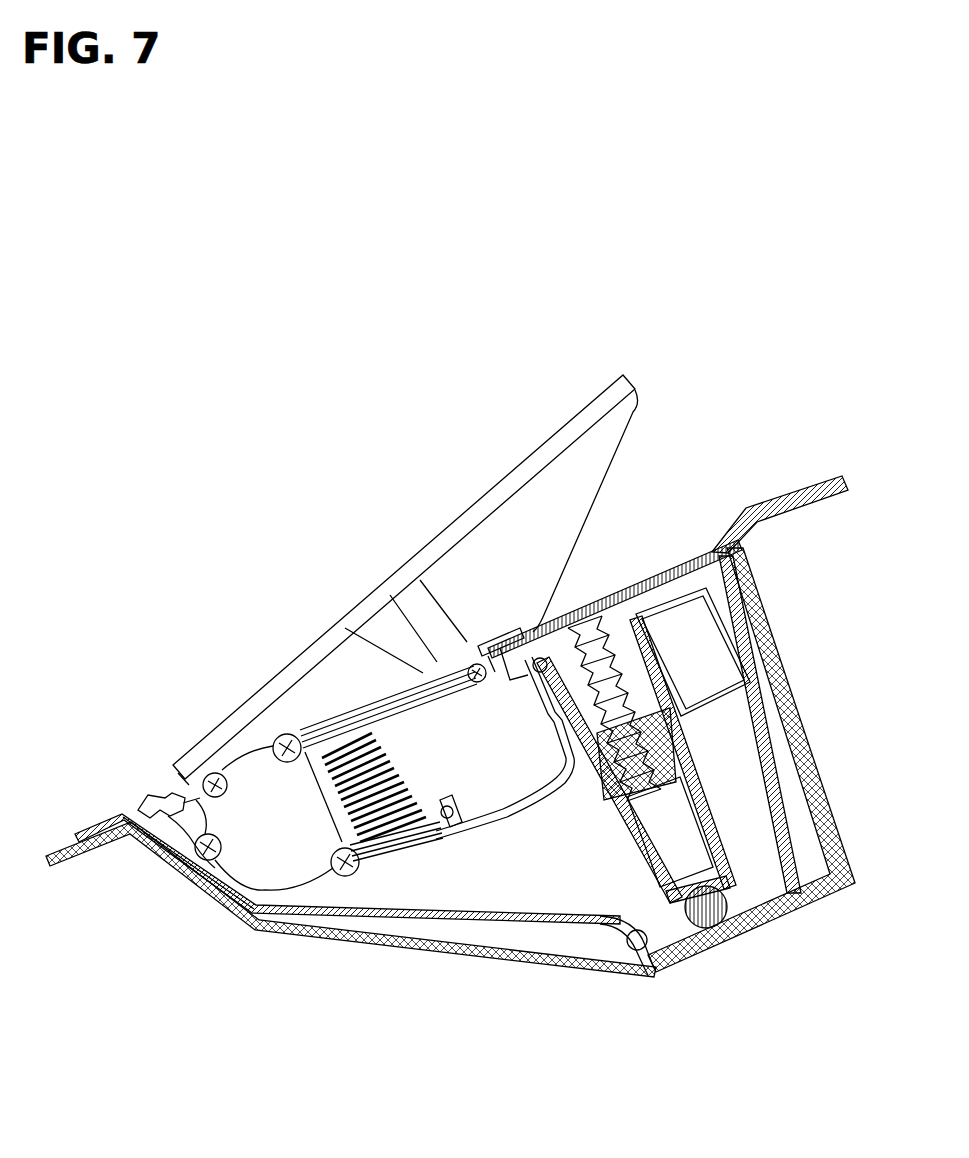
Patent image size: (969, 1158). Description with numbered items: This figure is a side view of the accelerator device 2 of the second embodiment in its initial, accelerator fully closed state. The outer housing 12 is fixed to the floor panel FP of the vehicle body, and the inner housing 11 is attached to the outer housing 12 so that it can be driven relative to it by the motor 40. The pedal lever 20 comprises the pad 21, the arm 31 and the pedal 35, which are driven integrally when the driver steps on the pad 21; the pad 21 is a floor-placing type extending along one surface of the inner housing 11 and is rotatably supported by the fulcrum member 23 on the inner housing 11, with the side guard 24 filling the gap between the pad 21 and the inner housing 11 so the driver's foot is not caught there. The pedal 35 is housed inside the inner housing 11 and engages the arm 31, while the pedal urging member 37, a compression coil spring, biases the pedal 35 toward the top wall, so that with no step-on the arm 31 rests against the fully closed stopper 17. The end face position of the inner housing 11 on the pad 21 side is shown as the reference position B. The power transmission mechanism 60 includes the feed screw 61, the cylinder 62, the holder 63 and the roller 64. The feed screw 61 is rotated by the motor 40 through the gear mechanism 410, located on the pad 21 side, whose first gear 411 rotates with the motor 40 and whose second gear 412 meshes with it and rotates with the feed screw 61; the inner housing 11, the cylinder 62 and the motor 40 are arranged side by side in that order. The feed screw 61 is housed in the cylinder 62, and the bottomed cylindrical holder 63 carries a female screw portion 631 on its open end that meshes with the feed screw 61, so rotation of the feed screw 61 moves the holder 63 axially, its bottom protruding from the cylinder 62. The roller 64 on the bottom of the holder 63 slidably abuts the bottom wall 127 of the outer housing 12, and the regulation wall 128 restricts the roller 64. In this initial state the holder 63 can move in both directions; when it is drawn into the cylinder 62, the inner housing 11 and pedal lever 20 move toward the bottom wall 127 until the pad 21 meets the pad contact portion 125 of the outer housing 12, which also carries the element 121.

The accelerator device 2 is at (154, 1015).
The inner housing 11 is at (500, 838).
The outer housing 12 is at (357, 912).
The fully closed stopper 17 is at (497, 650).
The pedal lever 20 is at (238, 678).
The pad 21 is at (600, 410).
The fulcrum member 23 is at (152, 866).
The side guard 24 is at (612, 440).
The arm 31 is at (412, 598).
The pedal 35 is at (370, 700).
The pedal urging member 37 is at (418, 895).
The motor 40 is at (710, 632).
The power transmission mechanism 60 is at (735, 801).
The feed screw 61 is at (745, 657).
The cylinder 62 is at (706, 700).
The holder 63 is at (768, 838).
The roller 64 is at (714, 918).
The hinge bracket 121 is at (120, 802).
The pad contact portion 125 is at (722, 535).
The bottom wall 127 is at (780, 908).
The regulation wall 128 is at (650, 966).
The gear mechanism 410 is at (711, 578).
The first gear 411 is at (665, 575).
The second gear 412 is at (603, 610).
The female screw portion 631 is at (700, 732).
The reference position B is at (200, 758).
The floor panel FP is at (295, 935).